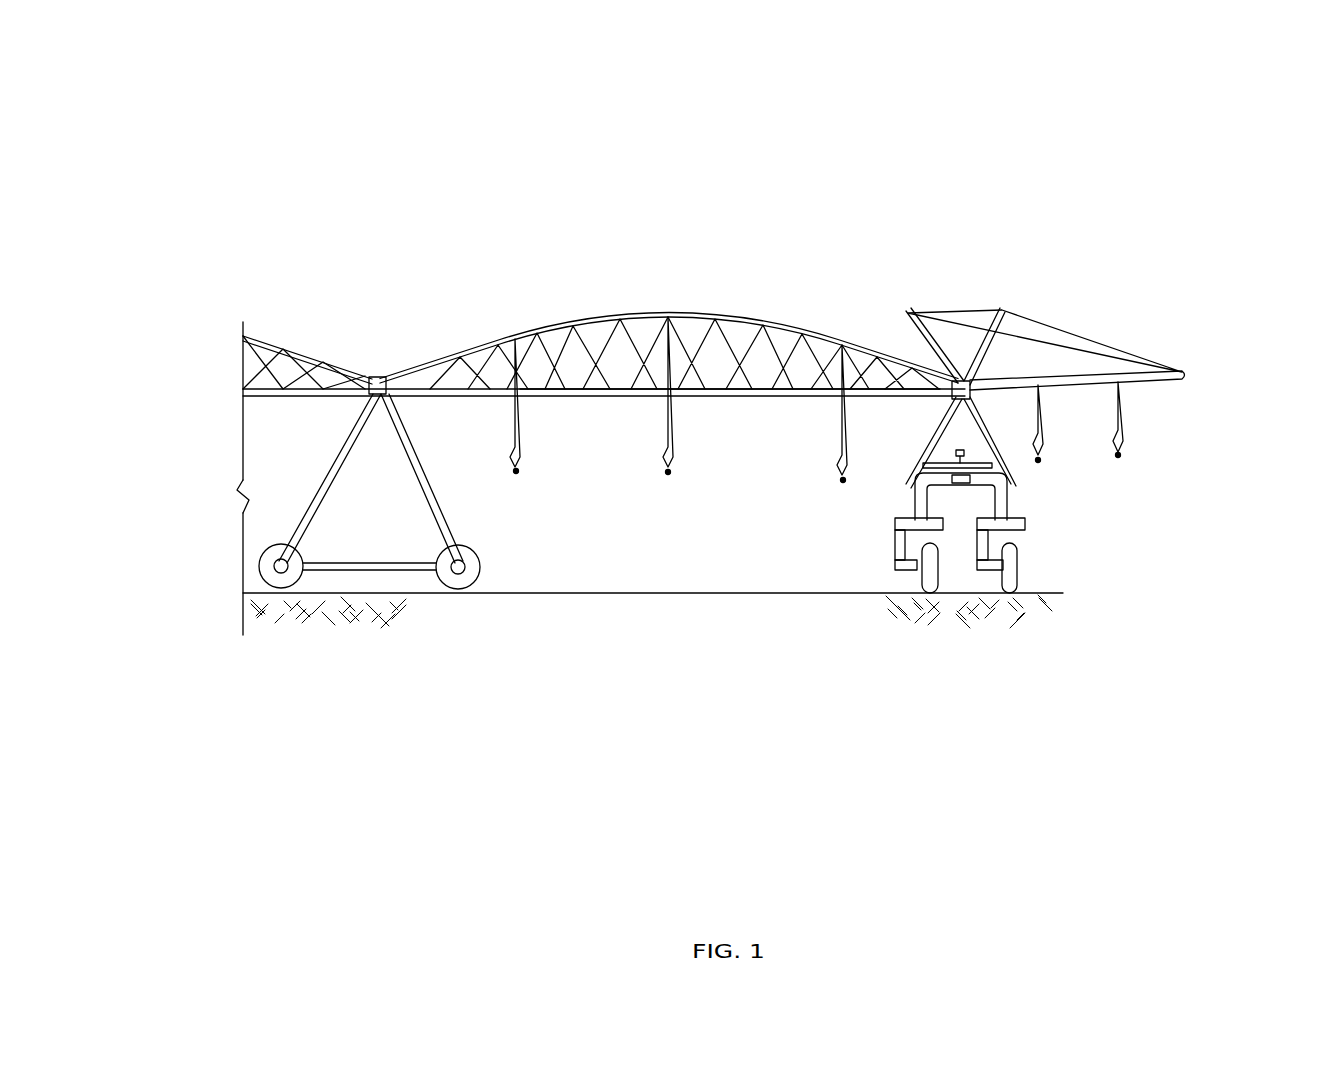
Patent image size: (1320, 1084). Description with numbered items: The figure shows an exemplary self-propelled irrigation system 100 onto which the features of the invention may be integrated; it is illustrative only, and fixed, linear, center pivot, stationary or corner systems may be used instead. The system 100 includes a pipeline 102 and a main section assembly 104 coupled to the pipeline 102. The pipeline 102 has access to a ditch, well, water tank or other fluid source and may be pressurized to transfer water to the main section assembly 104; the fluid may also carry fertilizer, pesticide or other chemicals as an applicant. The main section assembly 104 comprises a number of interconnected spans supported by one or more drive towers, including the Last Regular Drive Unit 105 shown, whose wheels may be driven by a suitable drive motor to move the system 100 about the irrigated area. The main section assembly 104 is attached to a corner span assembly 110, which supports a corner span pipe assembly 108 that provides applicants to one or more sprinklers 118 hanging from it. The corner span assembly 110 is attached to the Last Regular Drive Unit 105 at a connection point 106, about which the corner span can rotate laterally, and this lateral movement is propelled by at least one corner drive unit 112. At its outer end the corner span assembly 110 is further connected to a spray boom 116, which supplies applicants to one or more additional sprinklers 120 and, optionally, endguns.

The irrigation system 100 is at (261, 222).
The pipeline 102 is at (295, 352).
The main section assembly 104 is at (280, 393).
The Last Regular Drive Unit 105 is at (313, 505).
The connection point 106 is at (378, 376).
The corner span pipe assembly 108 is at (561, 323).
The corner span assembly 110 is at (778, 397).
The corner drive unit 112 is at (905, 527).
The spray boom 116 is at (1073, 373).
The sprinklers 118 is at (668, 472).
The additional sprinklers 120 is at (1038, 461).